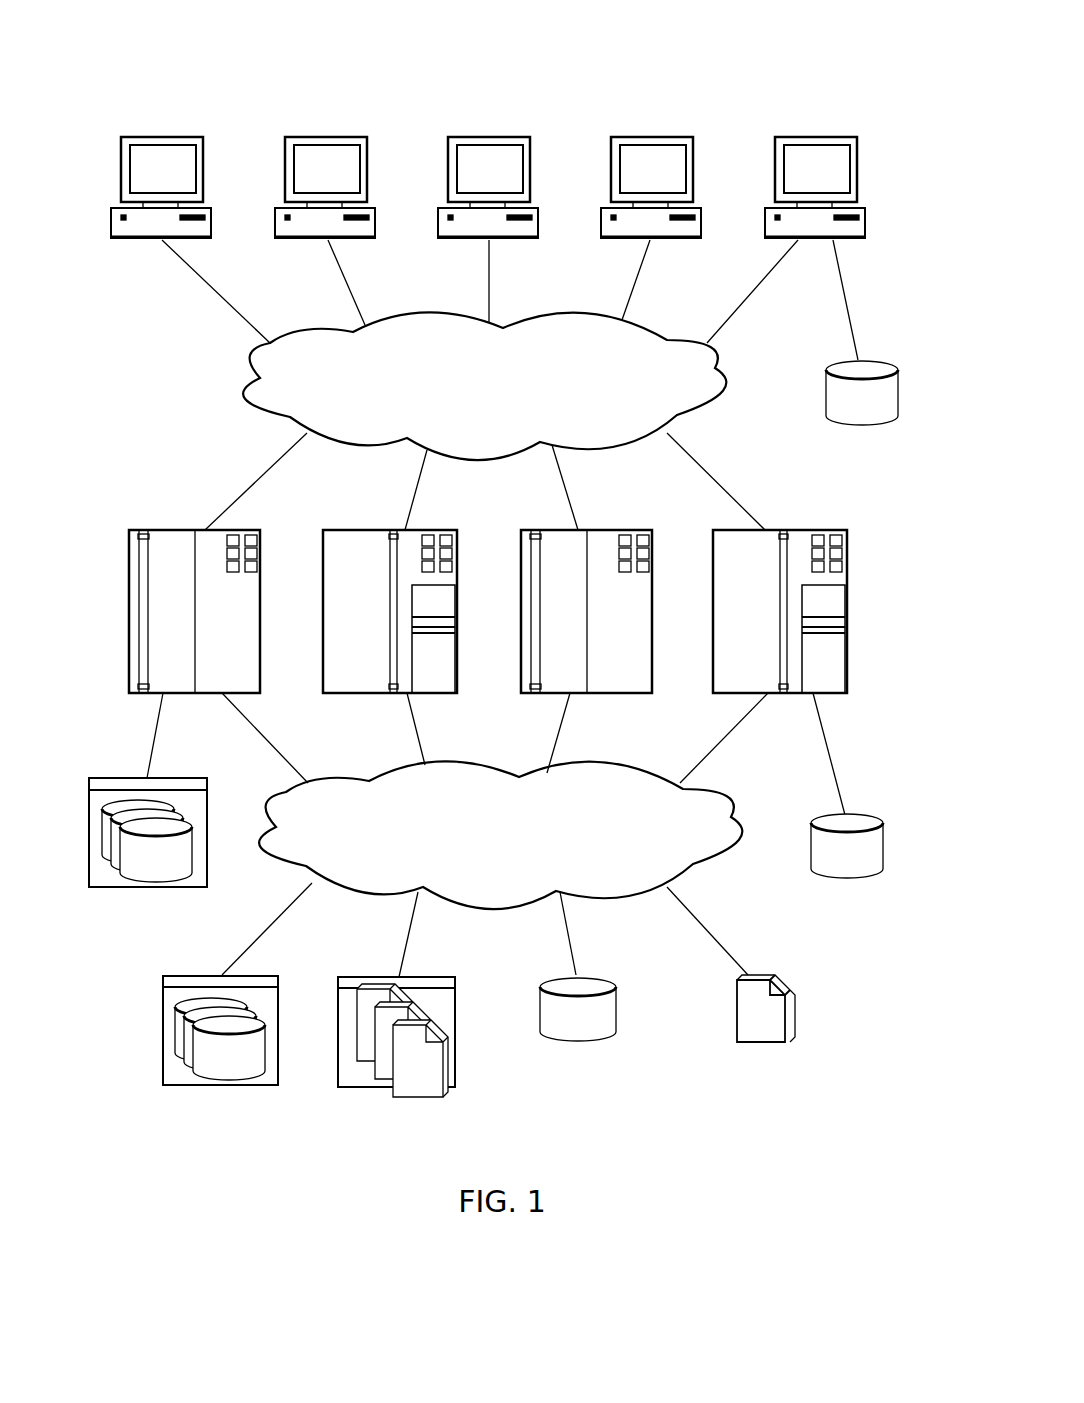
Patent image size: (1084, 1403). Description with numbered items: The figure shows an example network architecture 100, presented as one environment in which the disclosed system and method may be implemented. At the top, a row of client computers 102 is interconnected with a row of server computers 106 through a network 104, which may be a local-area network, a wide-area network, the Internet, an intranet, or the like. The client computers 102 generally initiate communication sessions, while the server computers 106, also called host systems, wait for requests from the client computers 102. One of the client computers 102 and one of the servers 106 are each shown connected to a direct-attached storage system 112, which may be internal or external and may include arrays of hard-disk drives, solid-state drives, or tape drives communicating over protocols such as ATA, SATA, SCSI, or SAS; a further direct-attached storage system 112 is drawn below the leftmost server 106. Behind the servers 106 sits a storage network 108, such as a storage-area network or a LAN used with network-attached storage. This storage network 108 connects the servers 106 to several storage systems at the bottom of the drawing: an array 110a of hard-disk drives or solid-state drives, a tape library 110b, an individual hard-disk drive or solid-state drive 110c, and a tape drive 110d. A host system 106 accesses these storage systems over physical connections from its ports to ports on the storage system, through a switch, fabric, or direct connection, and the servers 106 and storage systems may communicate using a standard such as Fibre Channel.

The network architecture 100 is at (236, 80).
The client computer 102 is at (145, 176).
The network 104 is at (619, 398).
The server computer 106 is at (153, 618).
The storage network 108 is at (601, 846).
The array of hard-disk drives or solid-state drives 110a is at (218, 1085).
The tape library 110b is at (398, 1087).
The individual hard-disk drive or solid-state drive 110c is at (577, 1035).
The tape drive 110d is at (760, 1043).
The direct-attached storage system 112 is at (147, 887).